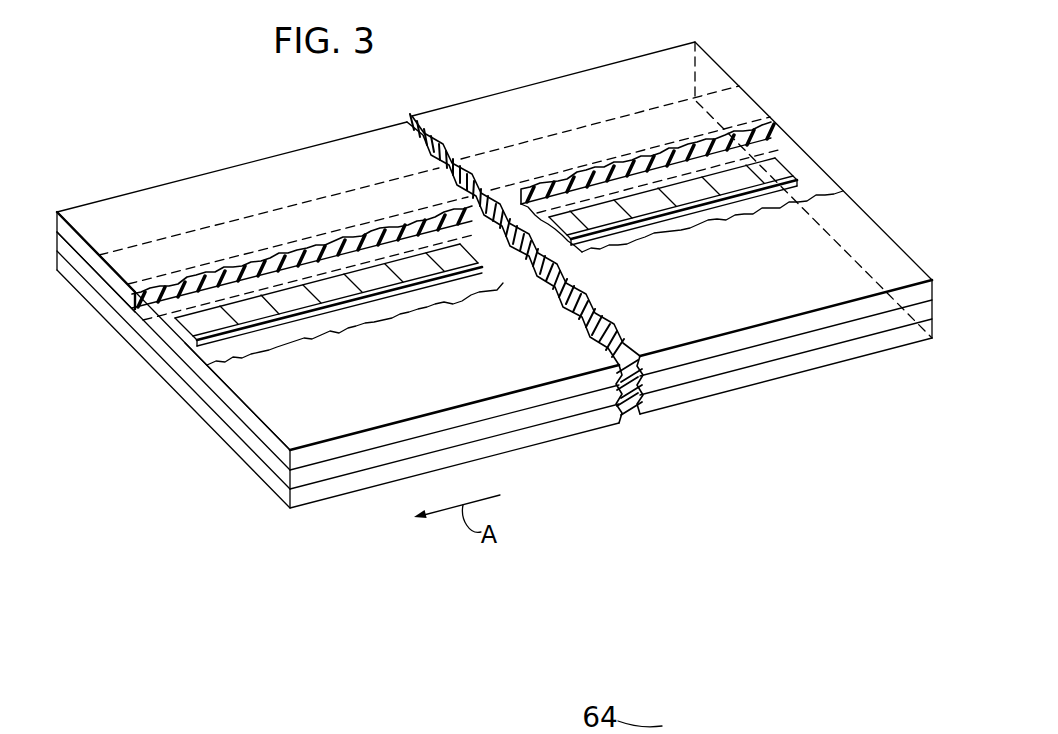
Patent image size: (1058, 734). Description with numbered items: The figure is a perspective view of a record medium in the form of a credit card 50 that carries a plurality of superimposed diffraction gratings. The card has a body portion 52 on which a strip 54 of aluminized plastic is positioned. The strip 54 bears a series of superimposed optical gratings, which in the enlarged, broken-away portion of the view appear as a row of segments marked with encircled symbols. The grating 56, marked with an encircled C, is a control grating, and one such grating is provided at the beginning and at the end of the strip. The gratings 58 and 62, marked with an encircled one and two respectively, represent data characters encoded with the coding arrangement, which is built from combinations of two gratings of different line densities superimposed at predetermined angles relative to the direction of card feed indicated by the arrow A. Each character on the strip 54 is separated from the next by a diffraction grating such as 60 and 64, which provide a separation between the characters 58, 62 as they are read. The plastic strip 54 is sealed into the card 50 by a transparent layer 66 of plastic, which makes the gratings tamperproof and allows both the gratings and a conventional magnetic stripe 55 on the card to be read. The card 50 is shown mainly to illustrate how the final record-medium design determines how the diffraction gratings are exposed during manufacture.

The credit card 50 is at (243, 148).
The body portion 52 is at (197, 360).
The strip 54 is at (200, 328).
The magnetic stripe 55 is at (103, 318).
The control grating 56 is at (270, 316).
The data character grating 58 is at (303, 310).
The separation grating 60 is at (348, 290).
The data character grating 62 is at (390, 278).
The separation grating 64 is at (430, 267).
The transparent layer 66 is at (237, 407).